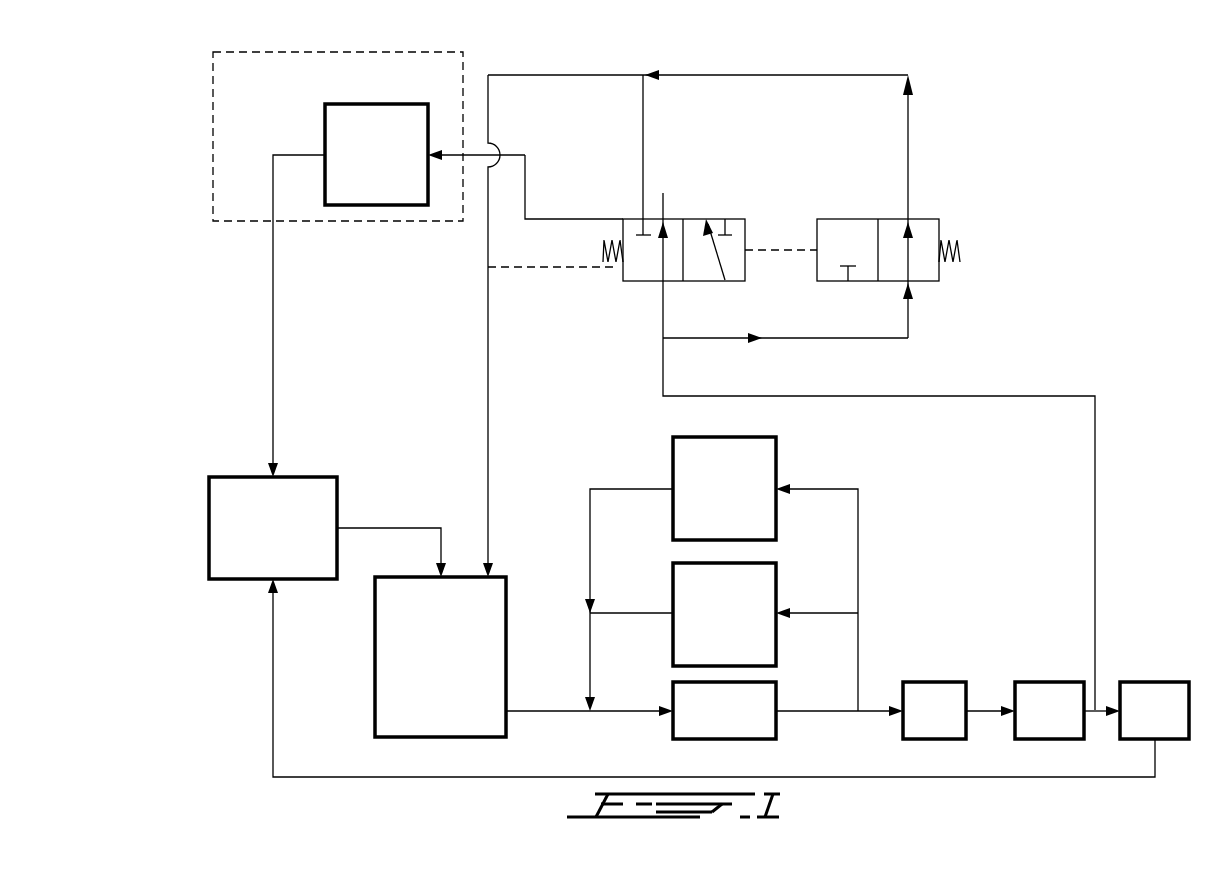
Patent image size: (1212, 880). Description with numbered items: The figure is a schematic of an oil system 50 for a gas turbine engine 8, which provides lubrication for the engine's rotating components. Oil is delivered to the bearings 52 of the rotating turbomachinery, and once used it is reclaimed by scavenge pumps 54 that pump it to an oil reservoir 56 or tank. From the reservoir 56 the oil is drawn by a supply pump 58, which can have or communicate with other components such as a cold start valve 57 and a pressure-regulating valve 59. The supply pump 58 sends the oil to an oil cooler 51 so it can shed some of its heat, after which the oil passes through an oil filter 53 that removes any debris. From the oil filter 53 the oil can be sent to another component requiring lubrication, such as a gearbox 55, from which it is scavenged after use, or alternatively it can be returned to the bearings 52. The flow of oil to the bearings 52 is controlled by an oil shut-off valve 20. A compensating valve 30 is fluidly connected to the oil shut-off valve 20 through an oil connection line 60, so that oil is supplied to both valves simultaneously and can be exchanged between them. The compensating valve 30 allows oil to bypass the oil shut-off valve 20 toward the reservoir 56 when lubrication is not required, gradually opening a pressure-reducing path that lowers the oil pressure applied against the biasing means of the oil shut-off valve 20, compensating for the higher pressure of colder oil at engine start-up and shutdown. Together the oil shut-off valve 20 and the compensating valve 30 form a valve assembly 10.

The gas turbine engine 8 is at (213, 108).
The valve assembly 10 is at (821, 316).
The oil shut-off valve (OSOV) 20 is at (611, 297).
The compensating valve 30 is at (953, 202).
The oil system 50 is at (871, 54).
The oil cooler 51 is at (949, 726).
The bearings 52 is at (390, 172).
The oil filter 53 is at (1064, 726).
The scavenge pumps 54 is at (288, 545).
The gearbox 55 is at (1169, 726).
The oil reservoir 56 is at (455, 672).
The cold start valve 57 is at (739, 630).
The supply pump 58 is at (739, 726).
The pressure-regulating valve 59 is at (739, 505).
The oil connection line 60 is at (784, 250).